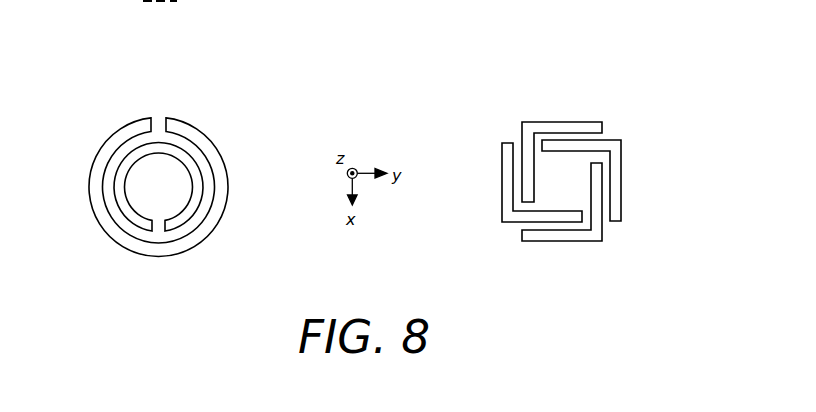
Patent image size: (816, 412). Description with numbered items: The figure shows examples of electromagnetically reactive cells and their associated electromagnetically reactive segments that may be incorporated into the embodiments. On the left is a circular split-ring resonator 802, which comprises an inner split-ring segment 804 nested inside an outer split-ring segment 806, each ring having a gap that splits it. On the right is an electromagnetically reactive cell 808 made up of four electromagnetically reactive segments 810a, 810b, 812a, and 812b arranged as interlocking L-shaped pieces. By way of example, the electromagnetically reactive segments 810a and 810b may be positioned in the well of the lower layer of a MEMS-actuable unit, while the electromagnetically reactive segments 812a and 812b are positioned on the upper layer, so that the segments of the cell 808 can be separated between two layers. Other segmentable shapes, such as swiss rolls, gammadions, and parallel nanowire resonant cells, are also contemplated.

The circular split-ring resonator 802 is at (195, 208).
The inner split-ring segment 804 is at (185, 160).
The outer split-ring segment 806 is at (218, 200).
The electromagnetically reactive cell 808 is at (565, 183).
The electromagnetically reactive segment 810a is at (505, 172).
The electromagnetically reactive segment 810b is at (618, 181).
The electromagnetically reactive segment 812a is at (552, 127).
The electromagnetically reactive segment 812b is at (595, 180).